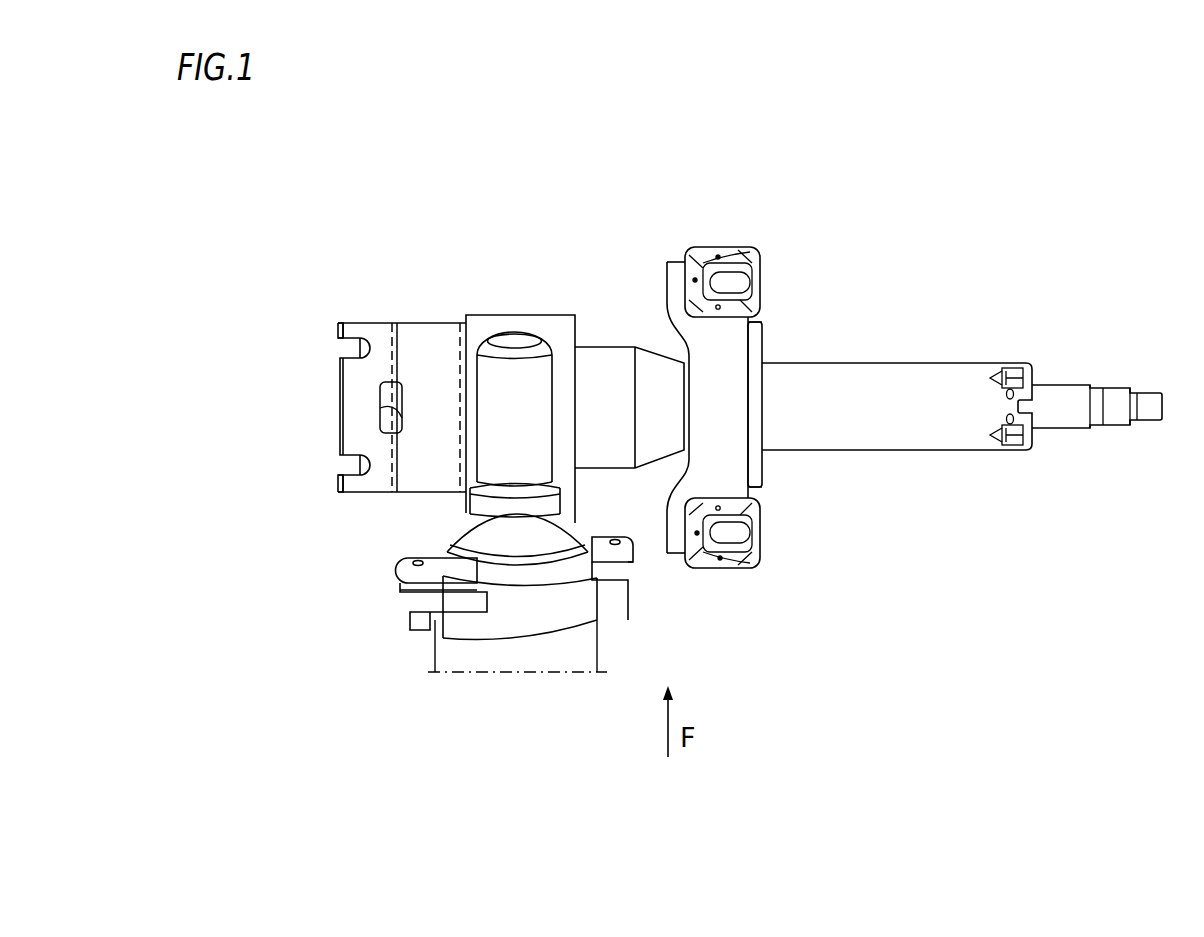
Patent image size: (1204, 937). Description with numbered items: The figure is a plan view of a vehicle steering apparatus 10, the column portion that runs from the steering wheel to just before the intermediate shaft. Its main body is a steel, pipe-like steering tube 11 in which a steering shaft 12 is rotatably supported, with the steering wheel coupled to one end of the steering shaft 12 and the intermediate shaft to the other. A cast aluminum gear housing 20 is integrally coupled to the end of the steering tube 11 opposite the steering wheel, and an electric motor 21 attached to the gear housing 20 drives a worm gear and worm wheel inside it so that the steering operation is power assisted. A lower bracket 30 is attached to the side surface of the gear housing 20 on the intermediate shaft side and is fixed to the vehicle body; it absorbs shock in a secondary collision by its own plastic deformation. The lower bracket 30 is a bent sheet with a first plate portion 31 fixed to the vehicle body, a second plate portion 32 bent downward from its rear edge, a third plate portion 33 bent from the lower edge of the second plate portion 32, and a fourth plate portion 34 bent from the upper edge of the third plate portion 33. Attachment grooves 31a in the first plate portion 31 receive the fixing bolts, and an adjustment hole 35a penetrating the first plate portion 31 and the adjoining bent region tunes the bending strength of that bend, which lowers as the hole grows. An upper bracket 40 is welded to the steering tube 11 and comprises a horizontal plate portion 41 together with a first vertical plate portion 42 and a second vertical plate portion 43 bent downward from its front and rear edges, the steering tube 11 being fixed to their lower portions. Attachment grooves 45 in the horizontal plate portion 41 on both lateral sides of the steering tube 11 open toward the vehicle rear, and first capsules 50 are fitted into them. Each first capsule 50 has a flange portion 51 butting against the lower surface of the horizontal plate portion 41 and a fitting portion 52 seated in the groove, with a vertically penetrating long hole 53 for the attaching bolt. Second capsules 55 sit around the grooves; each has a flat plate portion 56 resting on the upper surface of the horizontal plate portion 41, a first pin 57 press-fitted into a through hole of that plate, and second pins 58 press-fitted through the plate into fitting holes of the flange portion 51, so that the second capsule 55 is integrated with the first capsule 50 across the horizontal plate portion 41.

The vehicle steering apparatus 10 is at (962, 407).
The steering tube 11 is at (902, 437).
The steering shaft 12 is at (1075, 418).
The gear housing 20 is at (485, 320).
The electric motor 21 is at (452, 653).
The lower bracket 30 is at (346, 362).
The first plate portion 31 is at (360, 378).
The attachment grooves 31a is at (338, 326).
The second plate portion 32 is at (392, 320).
The third plate portion 33 is at (430, 340).
The fourth plate portion 34 is at (460, 318).
The adjustment hole 35a is at (405, 421).
The upper bracket 40 is at (730, 409).
The horizontal plate portion 41 is at (720, 425).
The first vertical plate portion 42 is at (690, 388).
The second vertical plate portion 43 is at (763, 390).
The attachment grooves 45 is at (740, 297).
The first capsules 50 is at (739, 409).
The flange portion 51 is at (763, 323).
The fitting portion 52 is at (752, 266).
The long hole 53 is at (745, 252).
The second capsules 55 is at (678, 271).
The flat plate portion 56 is at (718, 257).
The first pin 57 is at (695, 280).
The second pins 58 is at (730, 288).